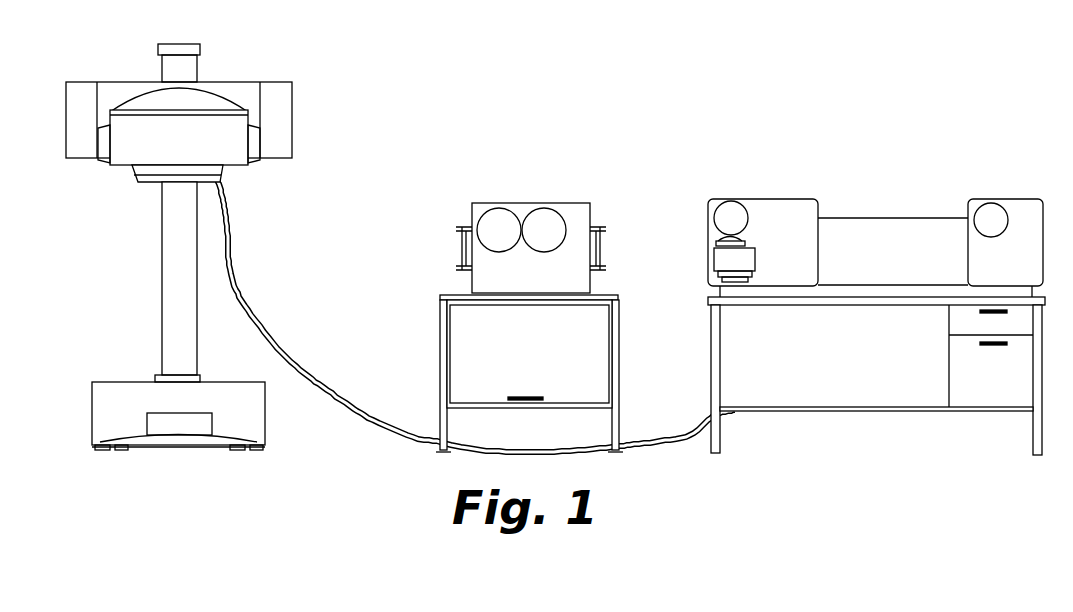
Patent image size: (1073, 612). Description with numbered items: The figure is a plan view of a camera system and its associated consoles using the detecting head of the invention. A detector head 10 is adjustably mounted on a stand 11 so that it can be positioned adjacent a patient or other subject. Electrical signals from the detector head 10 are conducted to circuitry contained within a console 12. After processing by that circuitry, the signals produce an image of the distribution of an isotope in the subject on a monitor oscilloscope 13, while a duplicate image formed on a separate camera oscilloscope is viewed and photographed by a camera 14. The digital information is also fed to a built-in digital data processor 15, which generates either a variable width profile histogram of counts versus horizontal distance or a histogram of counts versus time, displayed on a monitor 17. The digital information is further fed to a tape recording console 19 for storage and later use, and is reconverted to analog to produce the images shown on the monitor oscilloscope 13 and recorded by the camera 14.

The detector head 10 is at (124, 185).
The stand 11 is at (162, 290).
The console 12 is at (878, 421).
The monitor oscilloscope 13 is at (741, 199).
The camera 14 is at (714, 260).
The digital data processor 15 is at (1009, 190).
The monitor 17 is at (975, 208).
The tape recording console 19 is at (534, 193).